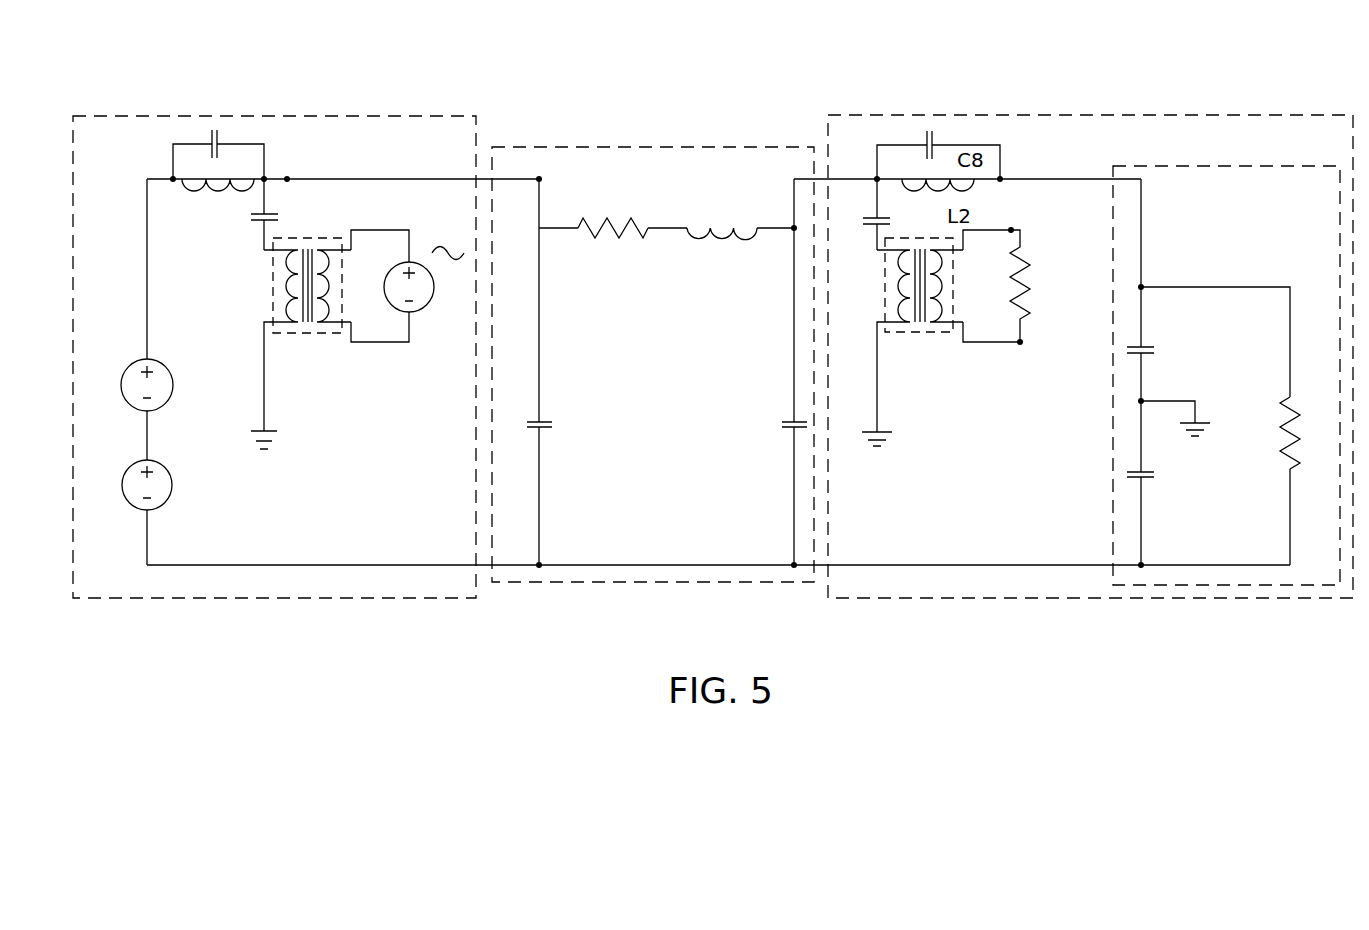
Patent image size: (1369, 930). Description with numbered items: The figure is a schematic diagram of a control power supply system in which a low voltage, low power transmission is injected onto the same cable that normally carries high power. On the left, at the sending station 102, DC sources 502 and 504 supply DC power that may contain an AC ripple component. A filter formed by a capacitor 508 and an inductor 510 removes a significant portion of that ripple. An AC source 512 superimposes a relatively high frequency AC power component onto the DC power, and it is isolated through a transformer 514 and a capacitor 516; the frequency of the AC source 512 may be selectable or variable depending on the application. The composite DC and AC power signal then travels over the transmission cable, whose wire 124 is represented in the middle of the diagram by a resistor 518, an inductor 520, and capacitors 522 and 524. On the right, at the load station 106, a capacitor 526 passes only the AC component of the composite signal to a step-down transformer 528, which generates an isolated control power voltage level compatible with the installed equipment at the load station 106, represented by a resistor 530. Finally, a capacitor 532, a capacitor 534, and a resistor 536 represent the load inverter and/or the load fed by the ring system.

The sending station 102 is at (355, 112).
The wire 124 is at (675, 143).
The load station 106 is at (1095, 103).
The DC source 502 is at (127, 368).
The DC source 504 is at (163, 466).
The capacitor 508 is at (211, 137).
The inductor 510 is at (197, 193).
The capacitor 516 is at (257, 227).
The transformer 514 is at (307, 342).
The AC source 512 is at (428, 302).
The resistor 518 is at (618, 223).
The inductor 520 is at (722, 225).
The capacitor 522 is at (547, 420).
The capacitor 524 is at (787, 420).
The capacitor 526 is at (887, 223).
The step-down transformer 528 is at (918, 342).
The resistor 530 is at (1028, 260).
The capacitor 532 is at (1148, 344).
The capacitor 534 is at (1148, 470).
The resistor 536 is at (1284, 427).